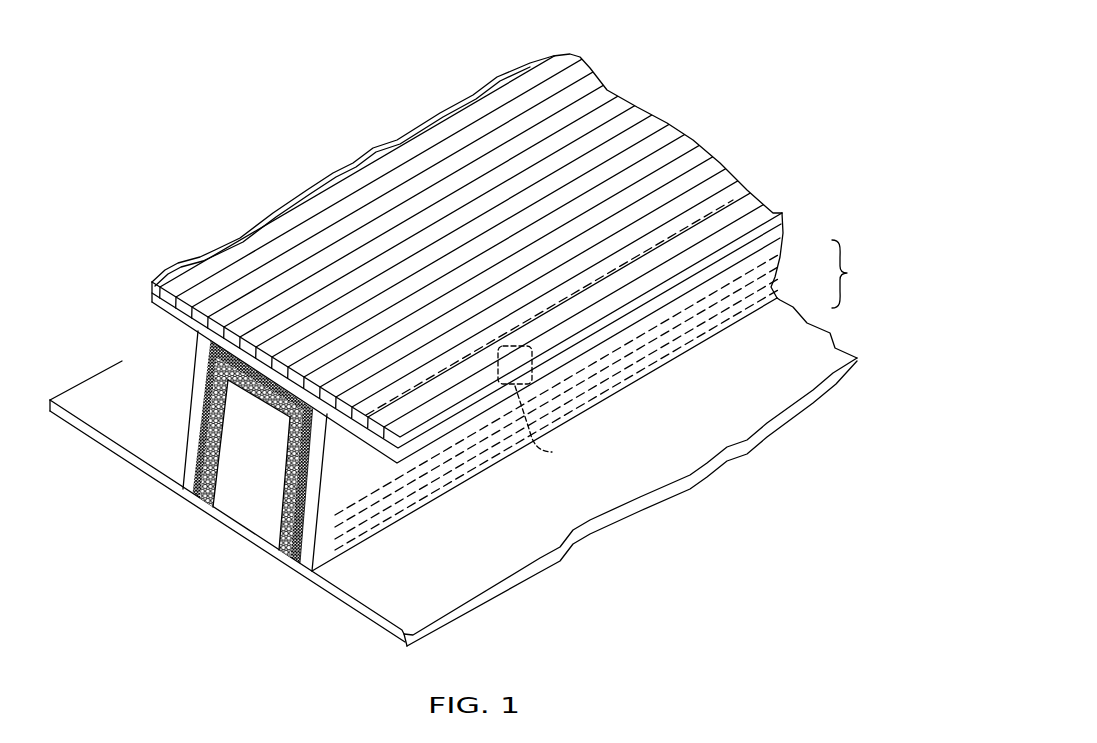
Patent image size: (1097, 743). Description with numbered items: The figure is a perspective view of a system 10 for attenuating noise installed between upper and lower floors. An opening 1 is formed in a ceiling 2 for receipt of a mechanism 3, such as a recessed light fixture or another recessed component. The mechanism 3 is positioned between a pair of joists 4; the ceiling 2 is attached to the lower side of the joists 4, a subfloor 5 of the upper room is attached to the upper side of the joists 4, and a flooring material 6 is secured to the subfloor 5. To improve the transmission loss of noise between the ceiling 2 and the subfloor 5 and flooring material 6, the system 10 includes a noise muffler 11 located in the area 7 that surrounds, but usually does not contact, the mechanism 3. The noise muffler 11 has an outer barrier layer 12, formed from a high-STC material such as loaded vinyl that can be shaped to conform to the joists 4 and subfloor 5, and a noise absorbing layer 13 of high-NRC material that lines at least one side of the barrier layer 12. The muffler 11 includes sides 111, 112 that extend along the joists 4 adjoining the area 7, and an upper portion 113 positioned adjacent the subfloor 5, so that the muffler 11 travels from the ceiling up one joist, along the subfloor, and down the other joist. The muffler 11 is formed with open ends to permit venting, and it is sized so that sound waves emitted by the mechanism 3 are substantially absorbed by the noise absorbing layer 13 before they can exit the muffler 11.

The opening 1 is at (552, 452).
The ceiling 2 is at (63, 421).
The mechanism 3 is at (533, 353).
The joists 4 is at (188, 427).
The subfloor 5 is at (785, 232).
The flooring material 6 is at (712, 165).
The area 7 is at (267, 520).
The system for attenuating noise 10 is at (207, 537).
The noise muffler 11 is at (198, 452).
The outer barrier layer 12 is at (203, 498).
The noise absorbing layer 13 is at (283, 548).
The side 111 is at (314, 541).
The side 112 is at (199, 380).
The upper portion 113 is at (247, 340).